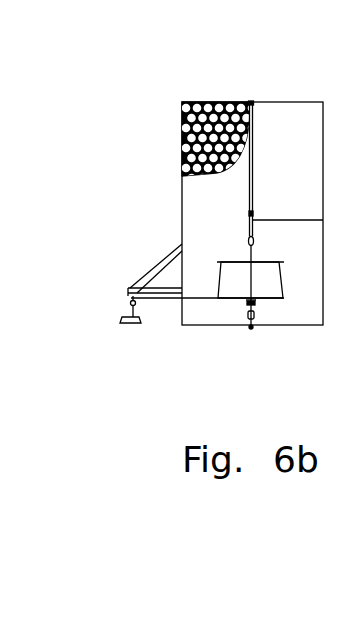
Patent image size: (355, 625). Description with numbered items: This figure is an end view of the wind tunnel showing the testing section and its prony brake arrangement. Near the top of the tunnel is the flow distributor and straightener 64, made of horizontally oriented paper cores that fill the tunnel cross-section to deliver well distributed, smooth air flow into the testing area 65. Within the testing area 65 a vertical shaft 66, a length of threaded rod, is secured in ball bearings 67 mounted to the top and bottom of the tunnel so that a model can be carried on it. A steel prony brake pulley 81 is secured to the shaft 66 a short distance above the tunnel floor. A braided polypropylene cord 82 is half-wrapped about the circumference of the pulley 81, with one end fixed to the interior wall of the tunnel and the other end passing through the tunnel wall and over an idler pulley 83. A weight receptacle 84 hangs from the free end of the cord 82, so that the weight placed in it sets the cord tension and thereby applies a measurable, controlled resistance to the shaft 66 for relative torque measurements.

The flow distributor and straightener 64 is at (186, 118).
The testing area 65 is at (276, 277).
The shaft 66 is at (258, 159).
The ball bearings 67 is at (301, 213).
The prony brake pulley 81 is at (299, 326).
The braided polypropylene cord 82 is at (189, 257).
The idler pulley 83 is at (186, 329).
The weight receptacle 84 is at (180, 354).